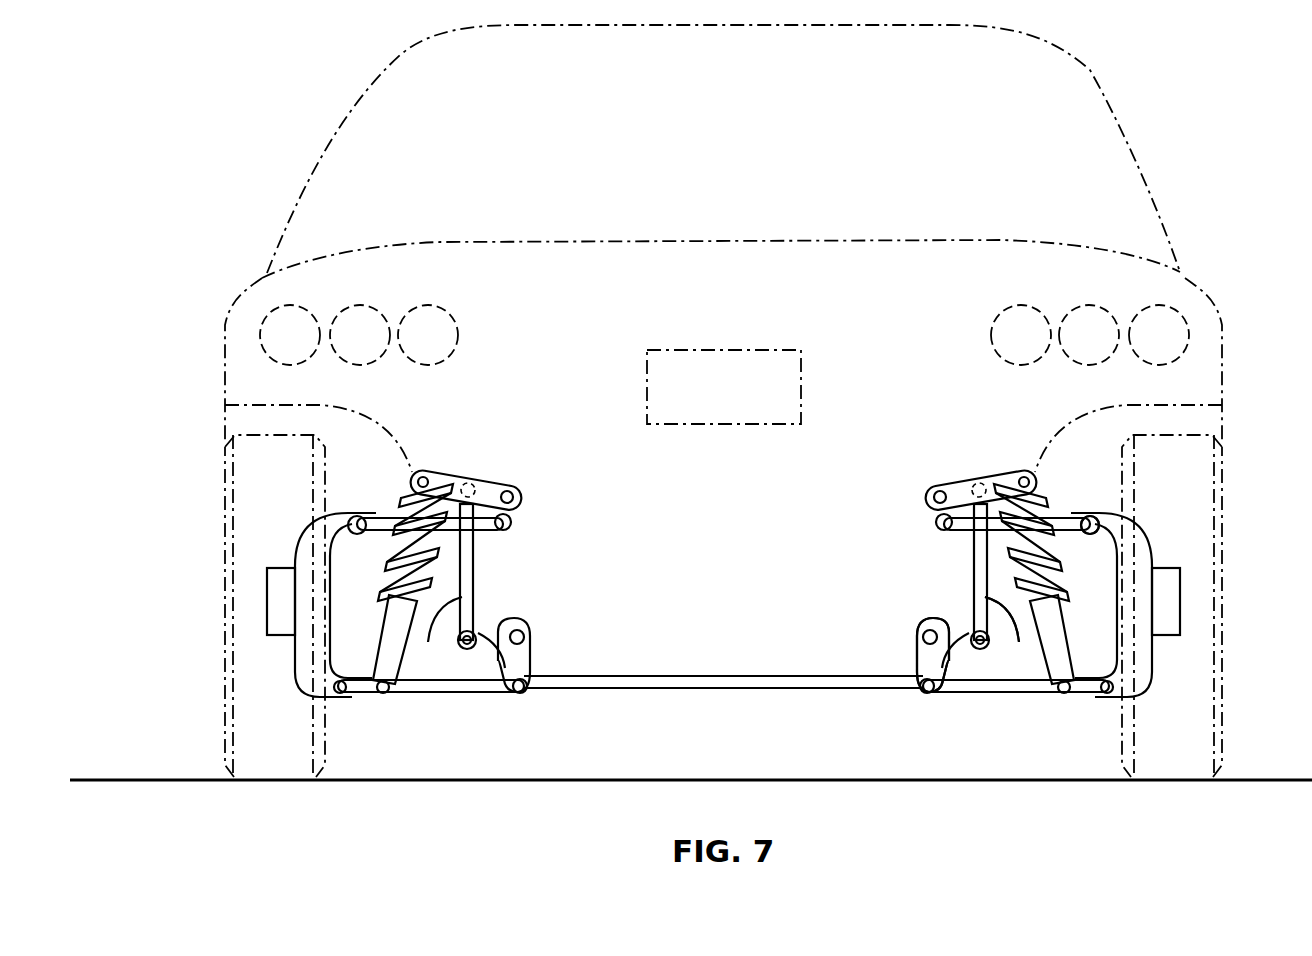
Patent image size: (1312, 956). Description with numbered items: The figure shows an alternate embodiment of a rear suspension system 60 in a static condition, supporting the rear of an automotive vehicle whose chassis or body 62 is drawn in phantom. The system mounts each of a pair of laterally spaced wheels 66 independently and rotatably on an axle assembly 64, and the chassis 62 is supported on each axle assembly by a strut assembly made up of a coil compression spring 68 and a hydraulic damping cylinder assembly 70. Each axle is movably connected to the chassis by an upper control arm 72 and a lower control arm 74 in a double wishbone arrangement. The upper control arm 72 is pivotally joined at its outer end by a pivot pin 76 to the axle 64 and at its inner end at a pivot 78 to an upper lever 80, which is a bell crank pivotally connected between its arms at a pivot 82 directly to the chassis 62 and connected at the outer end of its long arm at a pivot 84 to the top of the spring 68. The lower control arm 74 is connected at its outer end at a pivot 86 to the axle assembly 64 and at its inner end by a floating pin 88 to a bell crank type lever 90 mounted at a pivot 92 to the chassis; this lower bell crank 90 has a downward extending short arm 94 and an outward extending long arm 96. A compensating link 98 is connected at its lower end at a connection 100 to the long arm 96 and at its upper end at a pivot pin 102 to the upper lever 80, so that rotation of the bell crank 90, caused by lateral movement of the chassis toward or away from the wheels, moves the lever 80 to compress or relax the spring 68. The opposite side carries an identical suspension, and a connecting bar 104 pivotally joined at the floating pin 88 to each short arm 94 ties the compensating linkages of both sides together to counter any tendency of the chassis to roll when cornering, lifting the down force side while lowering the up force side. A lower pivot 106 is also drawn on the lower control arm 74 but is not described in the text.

The rear suspension system 60 is at (541, 817).
The vehicle chassis or body 62 is at (337, 160).
The axle assembly 64 is at (303, 648).
The wheels 66 is at (228, 522).
The coil compression spring 68 is at (445, 557).
The hydraulic damping cylinder assembly 70 is at (382, 650).
The upper control arm 72 is at (382, 520).
The lower control arm 74 is at (480, 692).
The pivot pin 76 is at (1104, 520).
The pivot 78 is at (940, 522).
The upper lever 80 is at (452, 476).
The pivot pin 82 is at (514, 497).
The pivot 84 is at (424, 477).
The pivot 86 is at (344, 696).
The floating pin 88 is at (523, 693).
The bell crank type lever 90 is at (518, 630).
The pivot 92 is at (528, 634).
The short arm 94 is at (918, 658).
The long arm 96 is at (963, 632).
The compensating link 98 is at (722, 635).
The lower end connection 100 is at (993, 690).
The pivot pin 102 is at (480, 480).
The connecting link or bar 104 is at (700, 692).
The shock absorber lower pivot 106 is at (388, 696).